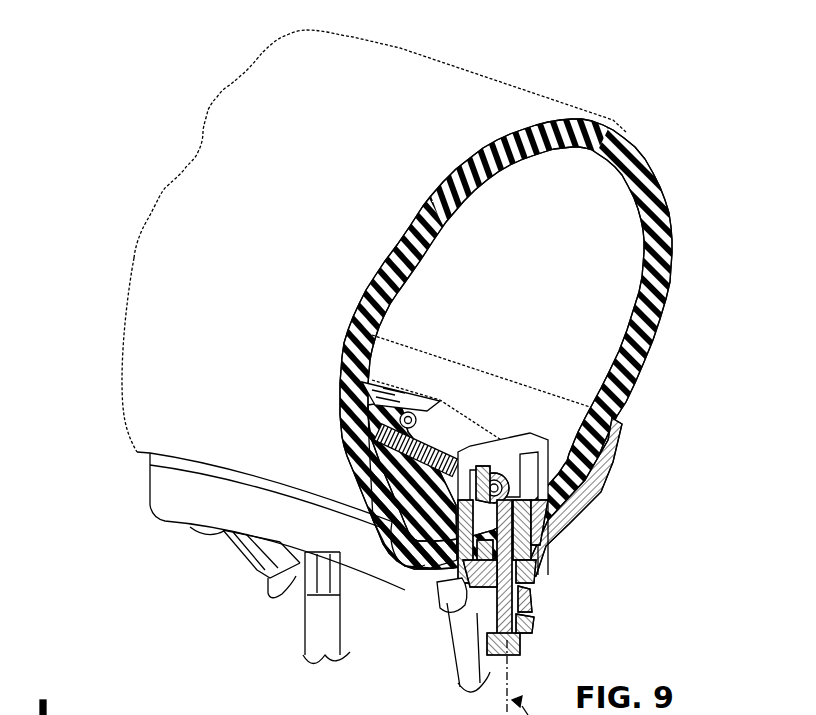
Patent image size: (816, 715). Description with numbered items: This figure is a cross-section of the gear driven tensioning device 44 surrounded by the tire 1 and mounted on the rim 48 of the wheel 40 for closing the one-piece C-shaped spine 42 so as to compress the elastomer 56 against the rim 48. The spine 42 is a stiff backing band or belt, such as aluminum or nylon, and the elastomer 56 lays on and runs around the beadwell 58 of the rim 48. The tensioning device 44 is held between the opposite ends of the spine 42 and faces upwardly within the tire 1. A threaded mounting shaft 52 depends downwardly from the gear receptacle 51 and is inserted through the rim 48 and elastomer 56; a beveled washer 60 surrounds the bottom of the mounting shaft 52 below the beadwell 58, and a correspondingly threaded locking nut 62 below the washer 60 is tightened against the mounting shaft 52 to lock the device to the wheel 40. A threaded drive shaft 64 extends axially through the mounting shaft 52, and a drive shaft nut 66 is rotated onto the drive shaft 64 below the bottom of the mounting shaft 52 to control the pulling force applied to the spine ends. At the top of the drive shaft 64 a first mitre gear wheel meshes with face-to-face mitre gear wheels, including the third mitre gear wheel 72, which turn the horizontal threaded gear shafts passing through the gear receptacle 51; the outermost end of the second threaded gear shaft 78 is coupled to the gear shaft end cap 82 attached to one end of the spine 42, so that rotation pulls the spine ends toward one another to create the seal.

The tire 1 is at (548, 94).
The wheel 40 is at (163, 524).
The C-shaped spine 42 is at (412, 398).
The tensioning device 44 is at (540, 440).
The rim 48 is at (604, 446).
The gear receptacle 51 is at (495, 450).
The threaded mounting shaft 52 is at (490, 632).
The elastomer 56 is at (447, 593).
The beadwell 58 is at (548, 522).
The beveled washer 60 is at (536, 572).
The locking nut 62 is at (533, 598).
The threaded drive shaft 64 is at (527, 627).
The drive shaft nut 66 is at (482, 660).
The third mitre gear wheel 72 is at (514, 440).
The second threaded gear shaft 78 is at (471, 457).
The gear shaft end cap 82 is at (385, 420).